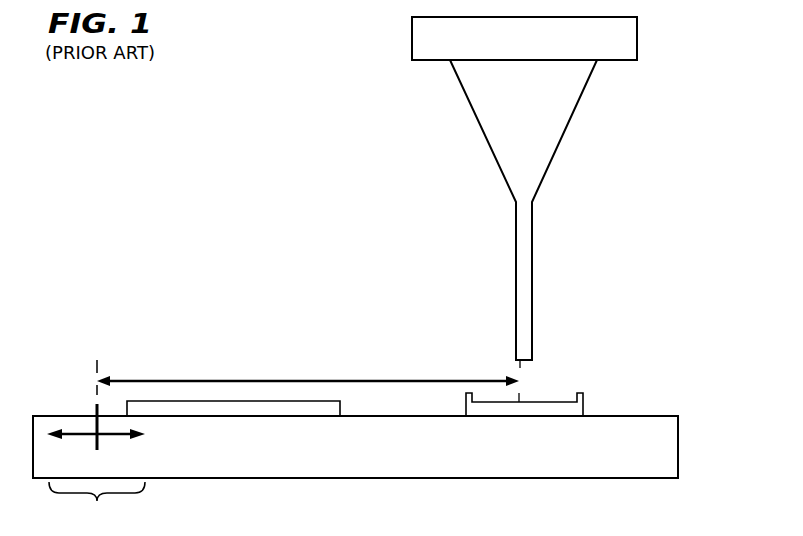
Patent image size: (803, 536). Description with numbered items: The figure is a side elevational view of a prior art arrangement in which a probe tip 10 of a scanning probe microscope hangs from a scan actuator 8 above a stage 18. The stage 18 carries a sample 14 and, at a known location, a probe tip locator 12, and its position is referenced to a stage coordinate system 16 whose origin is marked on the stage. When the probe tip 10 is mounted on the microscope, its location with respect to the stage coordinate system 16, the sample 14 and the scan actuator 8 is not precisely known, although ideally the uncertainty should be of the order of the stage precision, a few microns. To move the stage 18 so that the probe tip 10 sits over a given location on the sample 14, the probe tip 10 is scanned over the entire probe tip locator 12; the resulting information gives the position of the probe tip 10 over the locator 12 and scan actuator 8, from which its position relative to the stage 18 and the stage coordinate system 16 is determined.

The scan actuator 8 is at (637, 37).
The probe tip 10 is at (532, 282).
The probe tip locator 12 is at (583, 404).
The sample 14 is at (254, 400).
The stage coordinate system 16 is at (96, 464).
The stage 18 is at (678, 448).